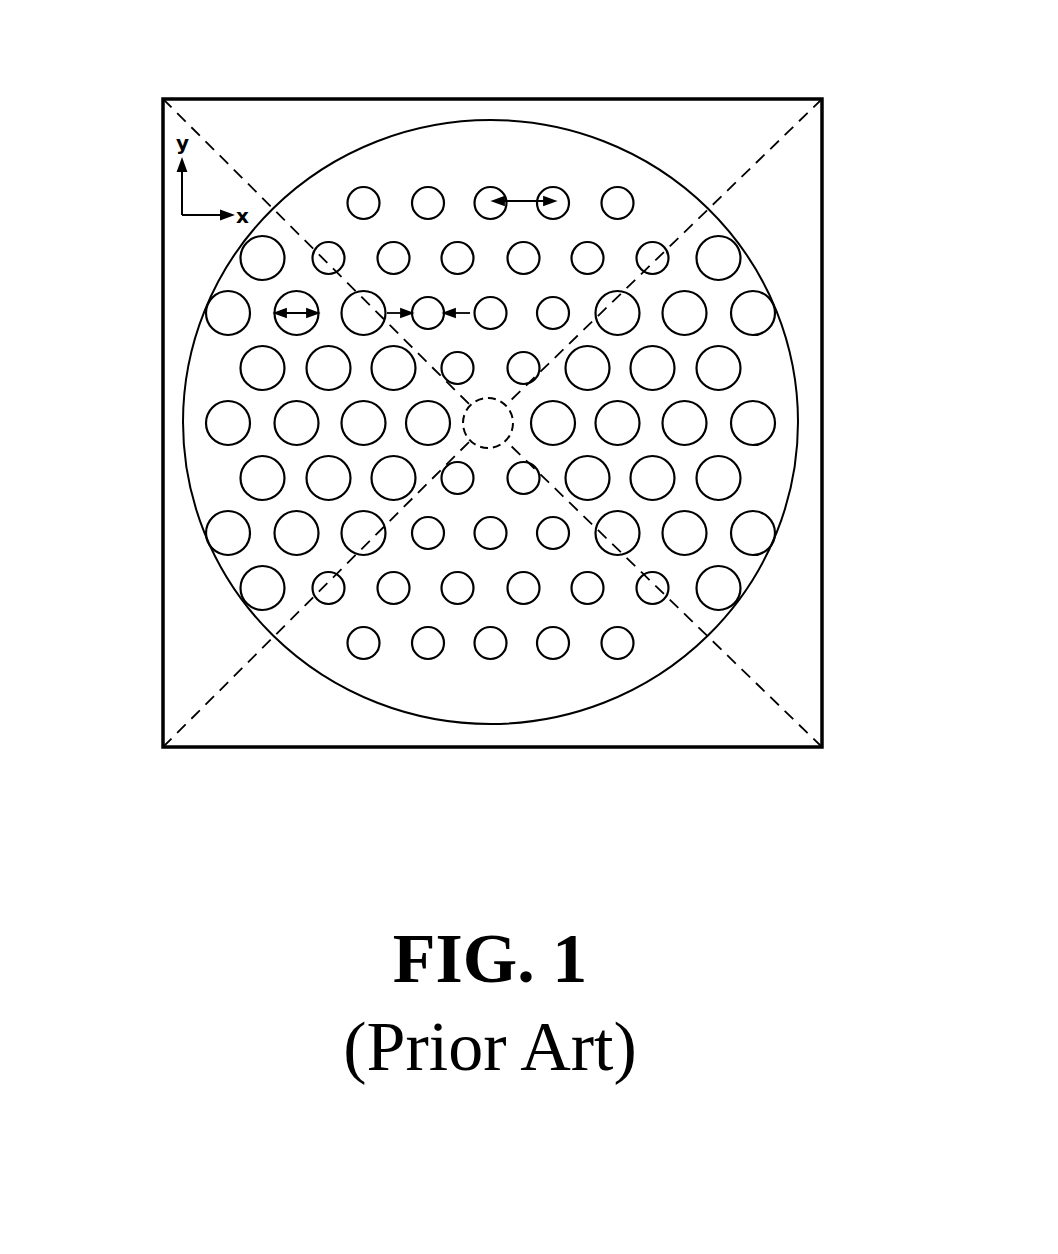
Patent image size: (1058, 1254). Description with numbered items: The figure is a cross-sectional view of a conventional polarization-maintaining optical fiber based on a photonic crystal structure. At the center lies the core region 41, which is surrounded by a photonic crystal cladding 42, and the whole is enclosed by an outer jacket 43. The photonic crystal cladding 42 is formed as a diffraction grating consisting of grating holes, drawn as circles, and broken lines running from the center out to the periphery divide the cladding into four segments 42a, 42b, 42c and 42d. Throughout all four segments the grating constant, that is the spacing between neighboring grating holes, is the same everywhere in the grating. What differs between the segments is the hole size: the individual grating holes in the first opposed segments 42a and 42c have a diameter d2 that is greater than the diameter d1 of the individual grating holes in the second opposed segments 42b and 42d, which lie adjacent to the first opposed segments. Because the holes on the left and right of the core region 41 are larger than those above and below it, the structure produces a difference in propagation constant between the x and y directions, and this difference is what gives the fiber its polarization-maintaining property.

The core region 41 is at (483, 397).
The photonic crystal cladding 42 is at (476, 434).
The first opposed segment 42a is at (203, 445).
The second opposed segment 42b is at (550, 685).
The first opposed segment 42c is at (748, 272).
The second opposed segment 42d is at (665, 200).
The jacket 43 is at (803, 345).
The diameter of grating holes in second opposed segments d1 is at (448, 311).
The diameter of grating holes in first opposed segments d2 is at (298, 310).